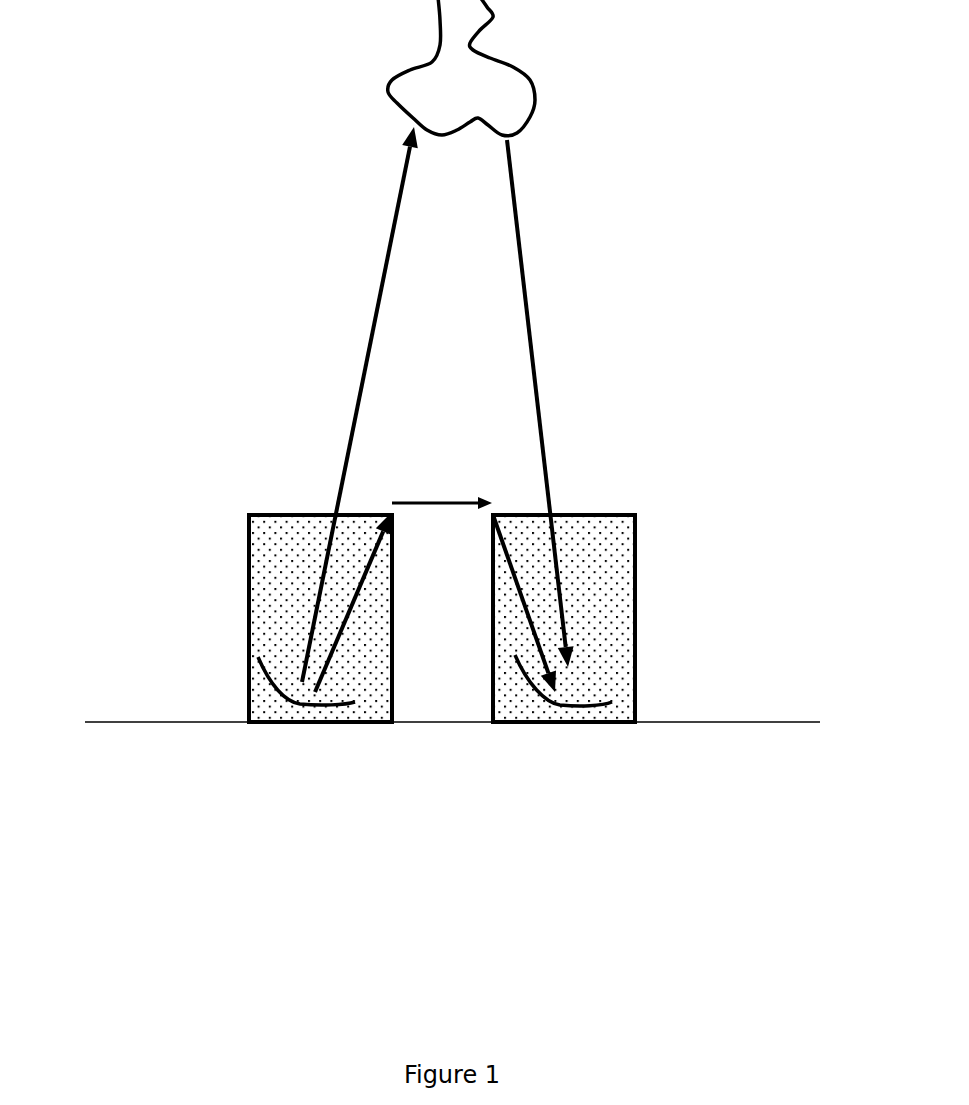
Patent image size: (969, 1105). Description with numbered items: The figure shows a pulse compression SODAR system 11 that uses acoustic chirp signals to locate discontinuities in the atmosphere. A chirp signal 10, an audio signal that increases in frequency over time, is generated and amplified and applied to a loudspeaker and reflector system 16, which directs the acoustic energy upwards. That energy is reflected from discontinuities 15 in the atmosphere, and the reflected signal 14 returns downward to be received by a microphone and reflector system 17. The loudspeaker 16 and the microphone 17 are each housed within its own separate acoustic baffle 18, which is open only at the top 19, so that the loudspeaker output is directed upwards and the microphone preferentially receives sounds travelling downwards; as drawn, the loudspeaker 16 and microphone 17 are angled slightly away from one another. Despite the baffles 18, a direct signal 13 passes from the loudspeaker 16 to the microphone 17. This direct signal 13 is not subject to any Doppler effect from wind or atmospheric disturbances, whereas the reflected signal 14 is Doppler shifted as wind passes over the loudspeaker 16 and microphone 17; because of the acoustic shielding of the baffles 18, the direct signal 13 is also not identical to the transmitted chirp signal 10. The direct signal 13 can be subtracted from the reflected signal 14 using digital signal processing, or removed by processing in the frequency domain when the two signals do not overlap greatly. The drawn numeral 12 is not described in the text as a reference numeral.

The chirp signal 10 is at (387, 267).
The pulse compression SODAR system 11 is at (240, 560).
The second housing block 12 is at (637, 643).
The direct signal 13 is at (492, 494).
The reflected signal 14 is at (534, 262).
The discontinuities in the atmosphere 15 is at (519, 62).
The loudspeaker and reflector system 16 is at (295, 702).
The microphone and reflector system 17 is at (560, 707).
The acoustic baffle 18 is at (271, 605).
The top 19 is at (287, 513).